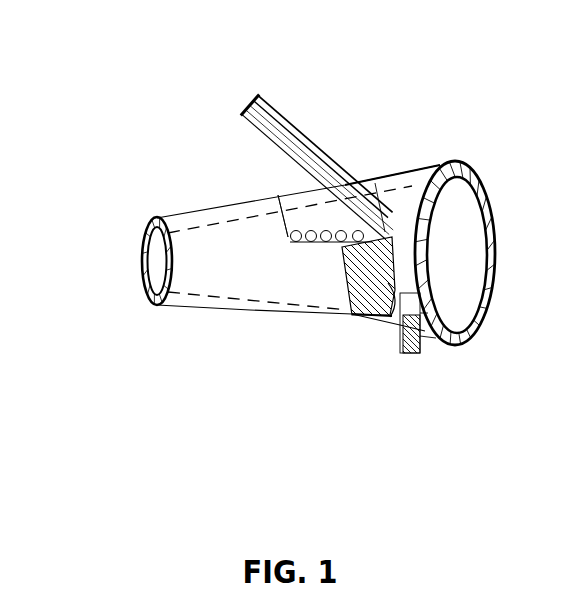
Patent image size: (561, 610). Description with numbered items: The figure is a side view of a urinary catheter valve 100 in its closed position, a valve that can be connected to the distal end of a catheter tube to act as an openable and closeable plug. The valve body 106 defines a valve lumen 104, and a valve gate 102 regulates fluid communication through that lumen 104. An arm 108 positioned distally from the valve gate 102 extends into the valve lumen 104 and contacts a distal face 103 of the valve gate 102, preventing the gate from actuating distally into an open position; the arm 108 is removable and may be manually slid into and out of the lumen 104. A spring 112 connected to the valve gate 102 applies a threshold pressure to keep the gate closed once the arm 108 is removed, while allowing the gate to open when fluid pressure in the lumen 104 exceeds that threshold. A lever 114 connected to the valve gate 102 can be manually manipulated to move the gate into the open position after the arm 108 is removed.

The valve 100 is at (482, 95).
The valve gate 102 is at (355, 315).
The distal face 103 is at (395, 297).
The valve lumen 104 is at (138, 257).
The valve body 106 is at (232, 203).
The arm 108 is at (421, 349).
The spring 112 is at (287, 243).
The lever 114 is at (270, 102).